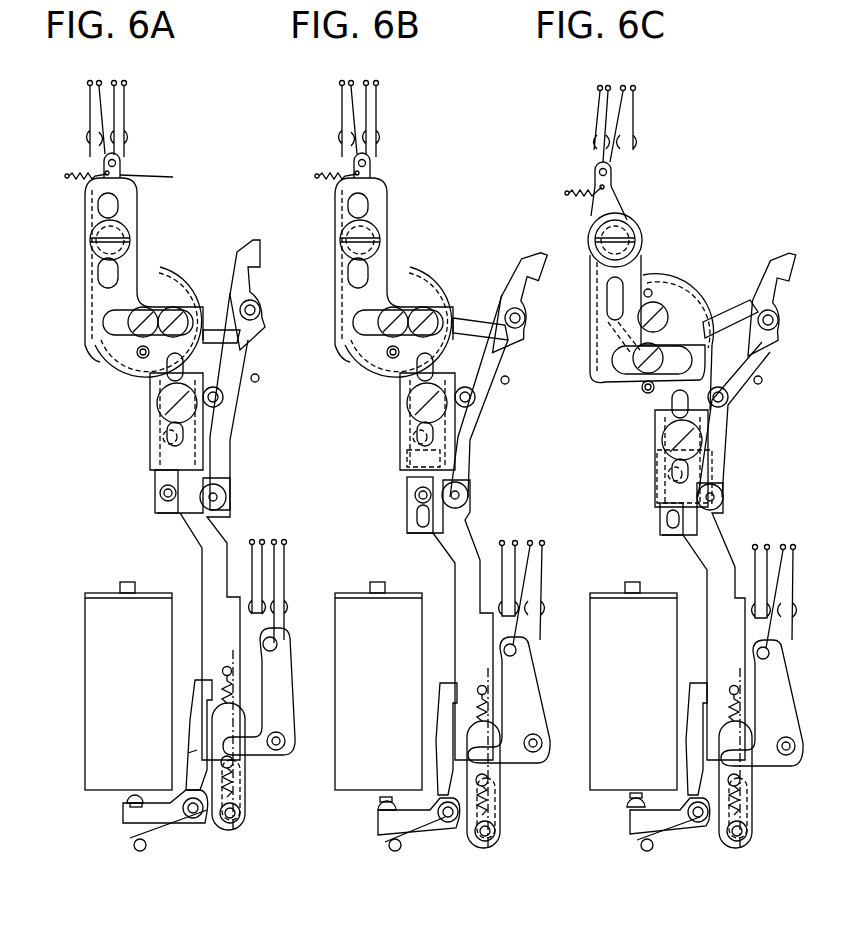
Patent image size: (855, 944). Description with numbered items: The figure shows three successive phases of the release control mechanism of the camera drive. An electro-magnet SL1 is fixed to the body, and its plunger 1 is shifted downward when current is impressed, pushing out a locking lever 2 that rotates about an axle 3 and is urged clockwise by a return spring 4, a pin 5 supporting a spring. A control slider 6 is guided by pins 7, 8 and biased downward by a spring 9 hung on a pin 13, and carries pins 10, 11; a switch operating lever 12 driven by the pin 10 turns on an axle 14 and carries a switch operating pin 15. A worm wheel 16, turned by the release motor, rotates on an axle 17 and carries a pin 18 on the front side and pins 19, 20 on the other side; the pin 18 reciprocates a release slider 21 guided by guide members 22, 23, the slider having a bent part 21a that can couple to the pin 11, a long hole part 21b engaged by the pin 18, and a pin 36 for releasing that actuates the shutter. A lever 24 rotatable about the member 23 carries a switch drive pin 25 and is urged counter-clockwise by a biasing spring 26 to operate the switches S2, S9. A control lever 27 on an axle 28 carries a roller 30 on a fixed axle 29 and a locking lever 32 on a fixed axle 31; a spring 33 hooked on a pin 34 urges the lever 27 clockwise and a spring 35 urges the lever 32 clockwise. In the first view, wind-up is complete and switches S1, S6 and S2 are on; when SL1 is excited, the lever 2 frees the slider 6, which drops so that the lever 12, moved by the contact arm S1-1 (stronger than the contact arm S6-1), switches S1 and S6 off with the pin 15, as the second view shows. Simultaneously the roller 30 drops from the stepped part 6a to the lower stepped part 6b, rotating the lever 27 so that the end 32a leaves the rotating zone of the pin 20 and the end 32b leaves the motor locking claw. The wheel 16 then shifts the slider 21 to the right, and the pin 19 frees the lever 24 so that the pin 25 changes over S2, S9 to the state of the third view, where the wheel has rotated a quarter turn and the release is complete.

In FIG. 6A, the plunger 1 is at (127, 800).
In FIG. 6B, the plunger 1 is at (378, 806).
In FIG. 6A, the locking lever 2 is at (123, 815).
In FIG. 6B, the locking lever 2 is at (378, 823).
In FIG. 6A, the axle 3 is at (193, 822).
In FIG. 6A, the return spring 4 is at (158, 833).
In FIG. 6A, the pin 5 is at (140, 851).
In FIG. 6A, the control slider 6 is at (198, 619).
In FIG. 6B, the control slider 6 is at (475, 628).
In FIG. 6C, the control slider 6 is at (728, 627).
In FIG. 6A, the stepped part 6a is at (185, 525).
In FIG. 6B, the stepped part 6a is at (466, 512).
In FIG. 6A, the lower stepped part 6b is at (217, 486).
In FIG. 6B, the lower stepped part 6b is at (455, 450).
In FIG. 6A, the pin 7 is at (160, 494).
In FIG. 6A, the pin 8 is at (231, 823).
In FIG. 6A, the spring 9 is at (246, 778).
In FIG. 6A, the pin 10 is at (236, 765).
In FIG. 6A, the pin 11 is at (163, 437).
In FIG. 6A, the switch operating lever 12 is at (280, 690).
In FIG. 6B, the switch operating lever 12 is at (515, 675).
In FIG. 6C, the switch operating lever 12 is at (770, 677).
In FIG. 6A, the pin 13 is at (222, 672).
In FIG. 6A, the axle 14 is at (288, 738).
In FIG. 6A, the switch operating pin 15 is at (278, 645).
In FIG. 6A, the worm wheel 16 is at (100, 358).
In FIG. 6B, the worm wheel 16 is at (403, 282).
In FIG. 6C, the worm wheel 16 is at (661, 283).
In FIG. 6A, the axle 17 is at (146, 306).
In FIG. 6A, the pin 18 is at (172, 306).
In FIG. 6B, the pin 18 is at (426, 306).
In FIG. 6C, the pin 18 is at (664, 316).
In FIG. 6A, the pin 19 is at (103, 325).
In FIG. 6A, the pin 20 is at (177, 270).
In FIG. 6A, the release slider 21 is at (85, 205).
In FIG. 6A, the bent part 21a is at (150, 467).
In FIG. 6A, the long hole part 21b is at (105, 300).
In FIG. 6C, the long hole part 21b is at (605, 370).
In FIG. 6A, the guide member 22 is at (157, 403).
In FIG. 6A, the guide member 23 is at (90, 245).
In FIG. 6A, the lever 24 is at (159, 179).
In FIG. 6A, the switch drive pin 25 is at (118, 167).
In FIG. 6A, the biasing spring 26 is at (67, 174).
In FIG. 6A, the control lever 27 is at (224, 398).
In FIG. 6A, the axle 28 is at (230, 401).
In FIG. 6A, the fixed axle 29 is at (218, 512).
In FIG. 6A, the roller 30 is at (226, 497).
In FIG. 6A, the fixed axle 31 is at (260, 305).
In FIG. 6A, the locking lever 32 is at (250, 280).
In FIG. 6A, the end 32a is at (203, 302).
In FIG. 6A, the end 32b is at (261, 258).
In FIG. 6A, the spring 33 is at (226, 452).
In FIG. 6A, the pin 34 is at (259, 378).
In FIG. 6A, the spring 35 is at (248, 342).
In FIG. 6A, the pin for releasing 36 is at (138, 358).
In FIG. 6B, the pin for releasing 36 is at (391, 360).
In FIG. 6C, the pin for releasing 36 is at (642, 392).
In FIG. 6A, the switch S1 is at (293, 592).
In FIG. 6B, the switch S1 is at (542, 593).
In FIG. 6C, the switch S1 is at (796, 590).
In FIG. 6A, the contact arm S1-1 is at (280, 550).
In FIG. 6A, the switch S2 is at (134, 115).
In FIG. 6B, the switch S2 is at (386, 115).
In FIG. 6C, the switch S2 is at (638, 119).
In FIG. 6A, the switch S6 is at (259, 566).
In FIG. 6B, the switch S6 is at (495, 574).
In FIG. 6C, the switch S6 is at (750, 575).
In FIG. 6A, the contact arm S6-1 is at (247, 580).
In FIG. 6A, the switch S9 is at (81, 115).
In FIG. 6B, the switch S9 is at (333, 115).
In FIG. 6C, the switch S9 is at (588, 119).
In FIG. 6A, the electro-magnet SL1 is at (128, 686).
In FIG. 6B, the electro-magnet SL1 is at (378, 686).
In FIG. 6C, the electro-magnet SL1 is at (633, 686).